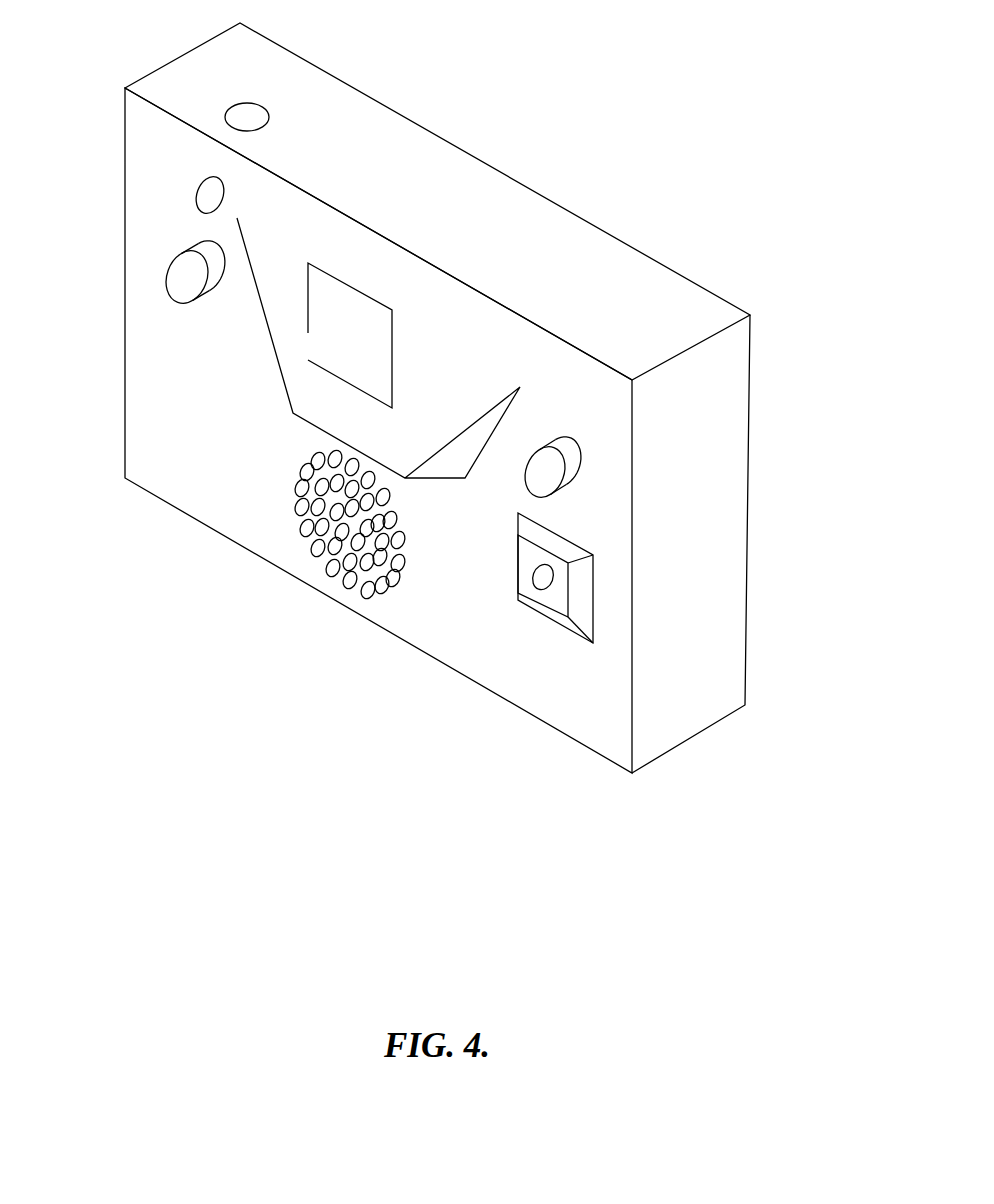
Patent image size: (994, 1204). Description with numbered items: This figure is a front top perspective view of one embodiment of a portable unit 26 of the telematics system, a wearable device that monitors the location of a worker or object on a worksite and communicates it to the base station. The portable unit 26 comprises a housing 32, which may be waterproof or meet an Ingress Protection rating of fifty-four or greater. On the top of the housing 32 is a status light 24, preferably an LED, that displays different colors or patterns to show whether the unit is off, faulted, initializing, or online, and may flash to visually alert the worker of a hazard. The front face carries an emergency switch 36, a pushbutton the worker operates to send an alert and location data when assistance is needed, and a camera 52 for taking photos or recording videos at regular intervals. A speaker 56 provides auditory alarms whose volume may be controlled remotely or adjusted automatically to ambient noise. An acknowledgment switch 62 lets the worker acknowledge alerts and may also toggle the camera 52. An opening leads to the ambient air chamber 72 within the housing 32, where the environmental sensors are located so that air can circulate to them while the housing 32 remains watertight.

The status light 24 is at (238, 117).
The portable unit 26 is at (742, 266).
The housing 32 is at (438, 385).
The emergency switch 36 is at (572, 477).
The camera 52 is at (543, 580).
The speaker 56 is at (316, 570).
The acknowledgment switch 62 is at (178, 275).
The ambient air chamber 72 is at (200, 192).